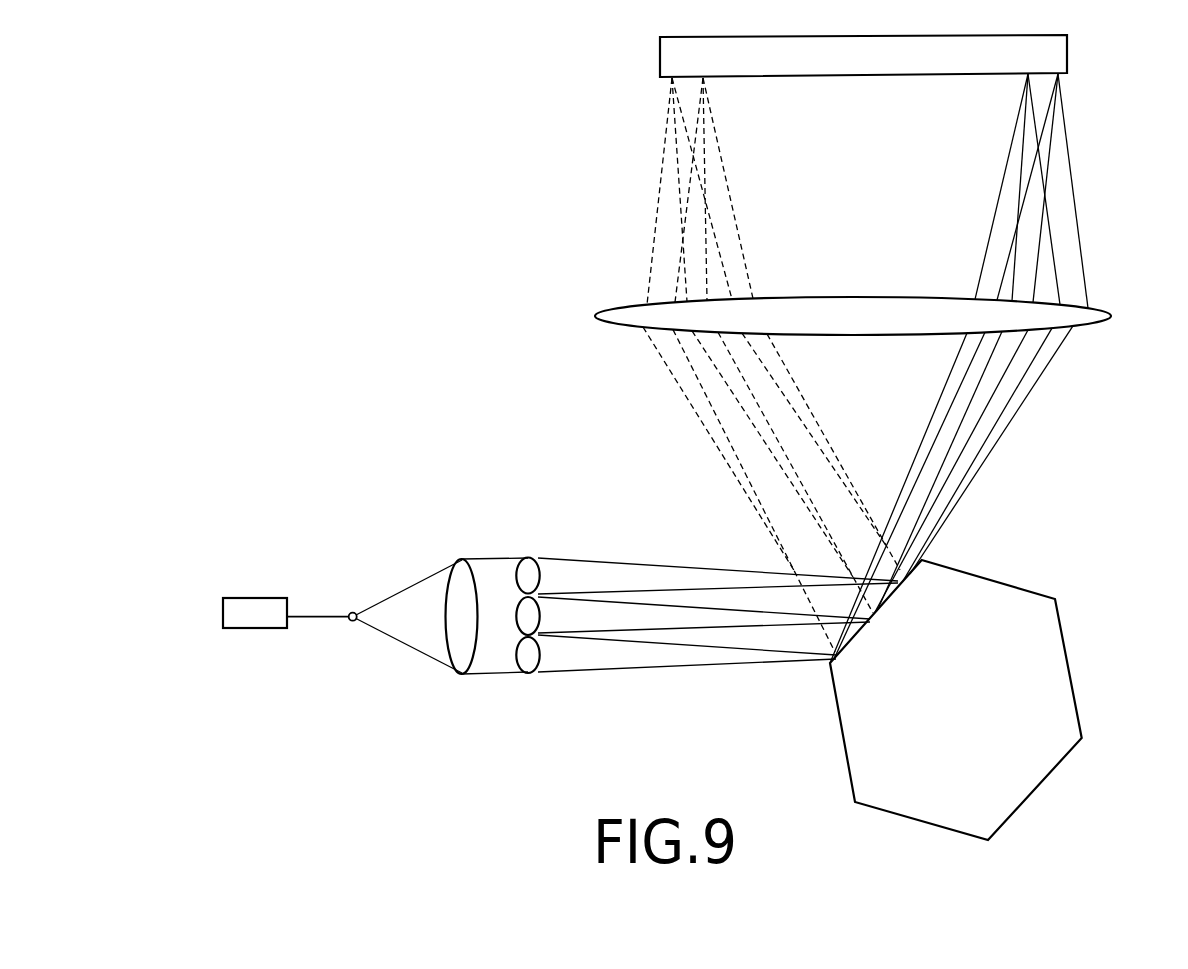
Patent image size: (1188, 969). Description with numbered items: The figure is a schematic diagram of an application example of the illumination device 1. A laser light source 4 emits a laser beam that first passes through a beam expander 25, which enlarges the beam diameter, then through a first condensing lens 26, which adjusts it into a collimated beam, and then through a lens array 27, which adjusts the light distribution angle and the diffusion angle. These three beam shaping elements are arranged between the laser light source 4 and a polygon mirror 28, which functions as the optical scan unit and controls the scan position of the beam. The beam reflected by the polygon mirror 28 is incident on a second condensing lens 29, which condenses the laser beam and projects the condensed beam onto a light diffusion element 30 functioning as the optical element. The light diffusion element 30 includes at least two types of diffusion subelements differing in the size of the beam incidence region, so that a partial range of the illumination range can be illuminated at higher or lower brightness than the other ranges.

The illumination device 1 is at (346, 292).
The laser light source 4 is at (247, 598).
The beam expander 25 is at (347, 612).
The first condensing lens 26 is at (457, 558).
The lens array 27 is at (526, 557).
The polygon mirror 28 is at (1050, 598).
The second condensing lens 29 is at (608, 312).
The light diffusion element 30 is at (660, 74).